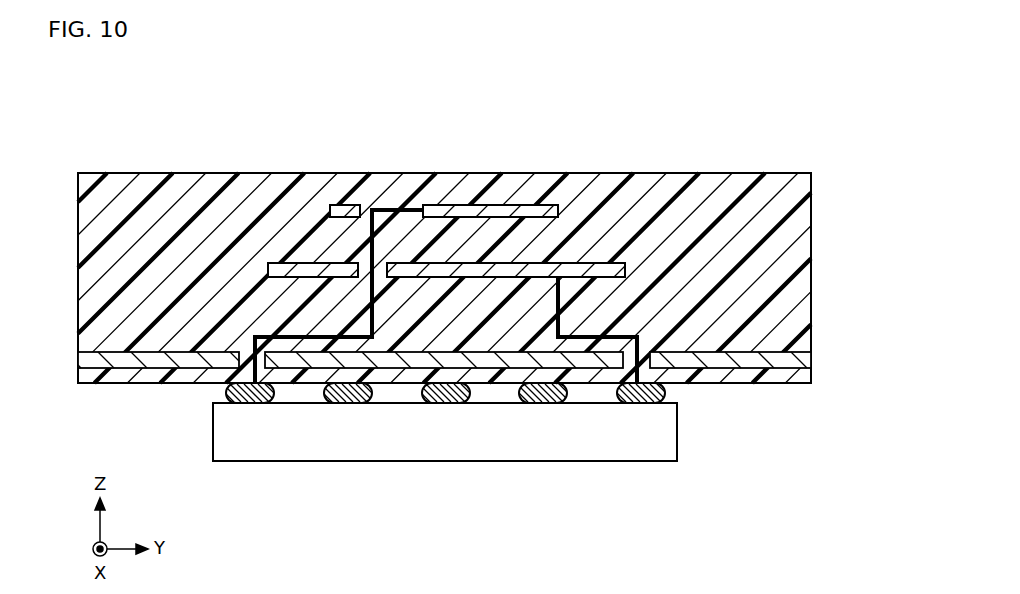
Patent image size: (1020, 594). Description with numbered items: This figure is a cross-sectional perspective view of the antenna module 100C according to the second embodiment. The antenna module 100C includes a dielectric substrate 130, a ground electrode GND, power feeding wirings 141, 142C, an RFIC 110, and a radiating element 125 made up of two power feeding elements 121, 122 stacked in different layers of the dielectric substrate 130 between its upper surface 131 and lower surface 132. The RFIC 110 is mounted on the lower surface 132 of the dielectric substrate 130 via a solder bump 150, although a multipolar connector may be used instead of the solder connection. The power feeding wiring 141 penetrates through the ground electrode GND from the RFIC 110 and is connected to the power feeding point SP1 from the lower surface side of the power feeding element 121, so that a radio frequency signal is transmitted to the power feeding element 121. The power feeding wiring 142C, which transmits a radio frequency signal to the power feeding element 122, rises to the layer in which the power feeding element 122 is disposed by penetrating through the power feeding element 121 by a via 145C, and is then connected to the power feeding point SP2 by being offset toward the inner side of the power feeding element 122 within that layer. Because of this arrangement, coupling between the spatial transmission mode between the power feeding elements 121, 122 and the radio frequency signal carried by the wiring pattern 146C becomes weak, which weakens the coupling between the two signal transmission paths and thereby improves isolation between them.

The antenna module 100C is at (852, 99).
The dielectric substrate 130 is at (805, 237).
The upper surface of dielectric substrate 131 is at (745, 173).
The lower surface 132 is at (748, 384).
The ground electrode GND is at (800, 360).
The radiating element 125 is at (532, 128).
The power feeding element 122 is at (466, 206).
The power feeding element 121 is at (508, 264).
The power feeding wiring 142C is at (303, 340).
The power feeding wiring 141 is at (640, 345).
The via 145C is at (375, 293).
The wiring pattern 146C is at (378, 210).
The power feeding point SP2 is at (421, 207).
The power feeding point SP1 is at (560, 275).
The solder bump 150 is at (228, 392).
The RFIC 110 is at (677, 432).